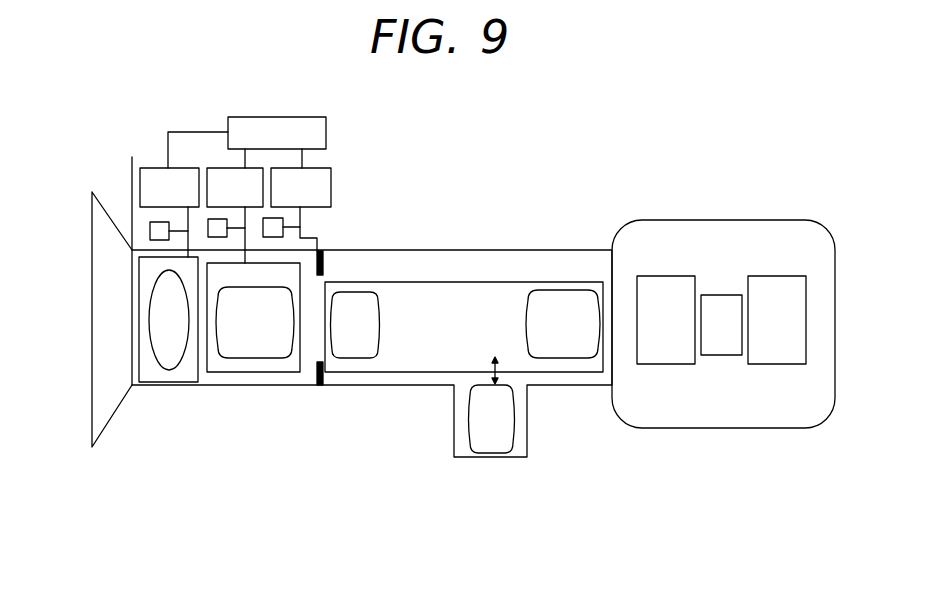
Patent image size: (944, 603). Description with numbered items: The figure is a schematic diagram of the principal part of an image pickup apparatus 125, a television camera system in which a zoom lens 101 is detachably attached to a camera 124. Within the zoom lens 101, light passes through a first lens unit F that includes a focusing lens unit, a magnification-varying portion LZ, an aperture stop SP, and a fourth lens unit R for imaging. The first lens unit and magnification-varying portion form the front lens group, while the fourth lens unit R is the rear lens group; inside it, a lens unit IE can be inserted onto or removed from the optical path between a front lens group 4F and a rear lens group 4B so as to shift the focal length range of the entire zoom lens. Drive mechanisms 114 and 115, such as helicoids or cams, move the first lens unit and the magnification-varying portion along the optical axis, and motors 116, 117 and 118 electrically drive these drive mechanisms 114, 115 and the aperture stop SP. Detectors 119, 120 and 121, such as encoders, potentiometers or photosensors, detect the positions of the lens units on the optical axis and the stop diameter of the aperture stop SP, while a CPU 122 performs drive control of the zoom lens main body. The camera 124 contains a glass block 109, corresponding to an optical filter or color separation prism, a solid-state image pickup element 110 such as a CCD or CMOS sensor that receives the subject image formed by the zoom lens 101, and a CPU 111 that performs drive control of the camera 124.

The zoom lens 101 is at (92, 268).
The drive mechanism 114 is at (169, 382).
The drive mechanism 115 is at (238, 372).
The motor 116 is at (184, 194).
The motor 117 is at (235, 206).
The motor 118 is at (301, 200).
The detector 119 is at (150, 228).
The detector 120 is at (217, 219).
The detector 121 is at (300, 220).
The CPU 122 is at (277, 133).
The camera 124 is at (782, 428).
The image pickup apparatus 125 is at (125, 467).
The glass block 109 is at (666, 320).
The solid-state image pickup element 110 is at (721, 325).
The CPU 111 is at (777, 320).
The aperture stop SP is at (316, 390).
The fourth lens unit R is at (558, 282).
The front lens group 4F is at (360, 292).
The rear lens group 4B is at (547, 292).
The lens unit IE is at (470, 418).